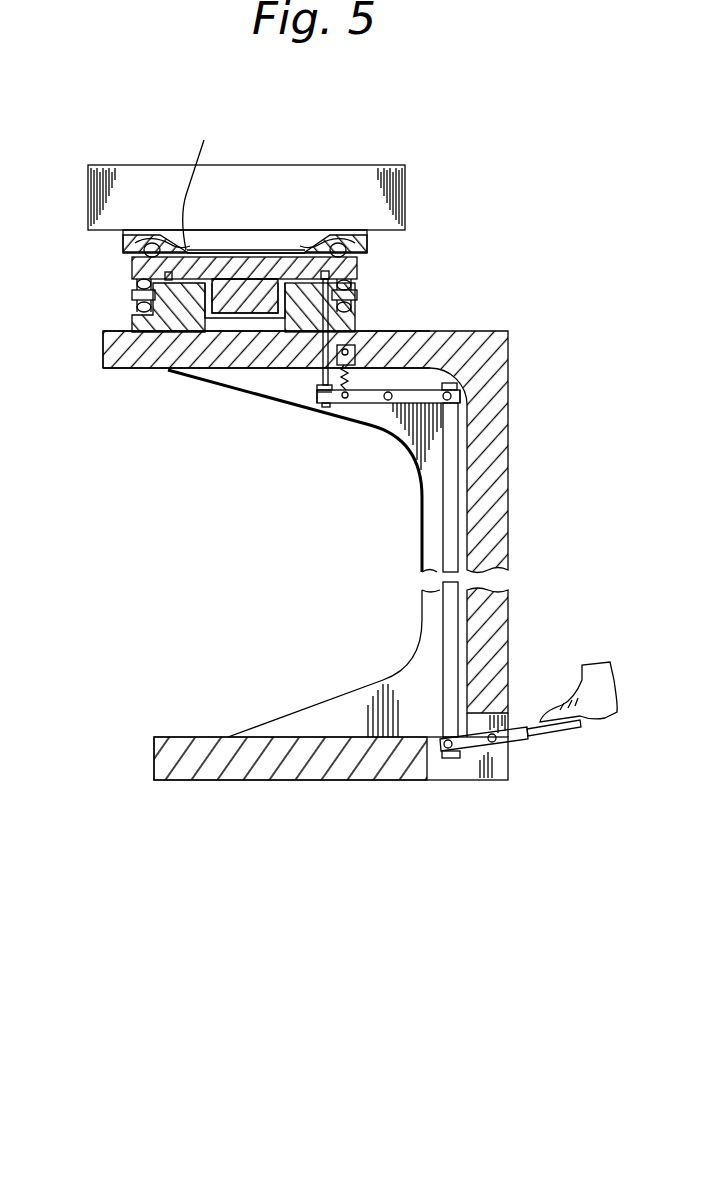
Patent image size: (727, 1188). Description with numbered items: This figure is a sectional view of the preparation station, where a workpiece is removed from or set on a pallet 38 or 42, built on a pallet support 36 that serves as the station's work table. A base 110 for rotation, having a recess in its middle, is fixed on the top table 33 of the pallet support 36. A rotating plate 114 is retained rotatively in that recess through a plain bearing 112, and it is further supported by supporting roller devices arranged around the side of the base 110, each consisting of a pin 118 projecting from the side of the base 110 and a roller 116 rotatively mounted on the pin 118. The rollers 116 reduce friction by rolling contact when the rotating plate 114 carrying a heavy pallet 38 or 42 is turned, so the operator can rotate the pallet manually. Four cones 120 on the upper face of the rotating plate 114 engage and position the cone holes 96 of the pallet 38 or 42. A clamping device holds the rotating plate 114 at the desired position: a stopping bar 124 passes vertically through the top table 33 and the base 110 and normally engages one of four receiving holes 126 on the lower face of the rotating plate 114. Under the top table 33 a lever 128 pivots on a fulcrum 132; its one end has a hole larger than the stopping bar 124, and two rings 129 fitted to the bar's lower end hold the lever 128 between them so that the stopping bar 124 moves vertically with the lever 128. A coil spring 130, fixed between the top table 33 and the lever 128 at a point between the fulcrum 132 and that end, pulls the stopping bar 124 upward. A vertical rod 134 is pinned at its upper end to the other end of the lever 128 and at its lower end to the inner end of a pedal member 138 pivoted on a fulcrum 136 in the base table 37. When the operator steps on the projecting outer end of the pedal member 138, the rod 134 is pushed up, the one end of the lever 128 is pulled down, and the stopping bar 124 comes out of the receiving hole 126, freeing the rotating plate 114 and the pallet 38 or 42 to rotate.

The pallet 38 is at (266, 173).
The pallet 42 is at (300, 178).
The cone hole 96 is at (207, 183).
The cone 120 is at (143, 246).
The rotating plate 114 is at (137, 270).
The plain bearing 112 is at (130, 347).
The roller 116 is at (133, 315).
The pin 118 is at (132, 297).
The receiving hole 126 is at (133, 283).
The pallet support 36 is at (486, 369).
The base 110 is at (158, 370).
The top table 33 is at (212, 382).
The stopping bar 124 is at (330, 340).
The coil spring 130 is at (356, 345).
The fulcrum 132 is at (390, 418).
The ring 129 is at (277, 401).
The lever 128 is at (340, 397).
The rod 134 is at (447, 522).
The base table 37 is at (343, 780).
The fulcrum 136 is at (495, 743).
The pedal member 138 is at (555, 732).